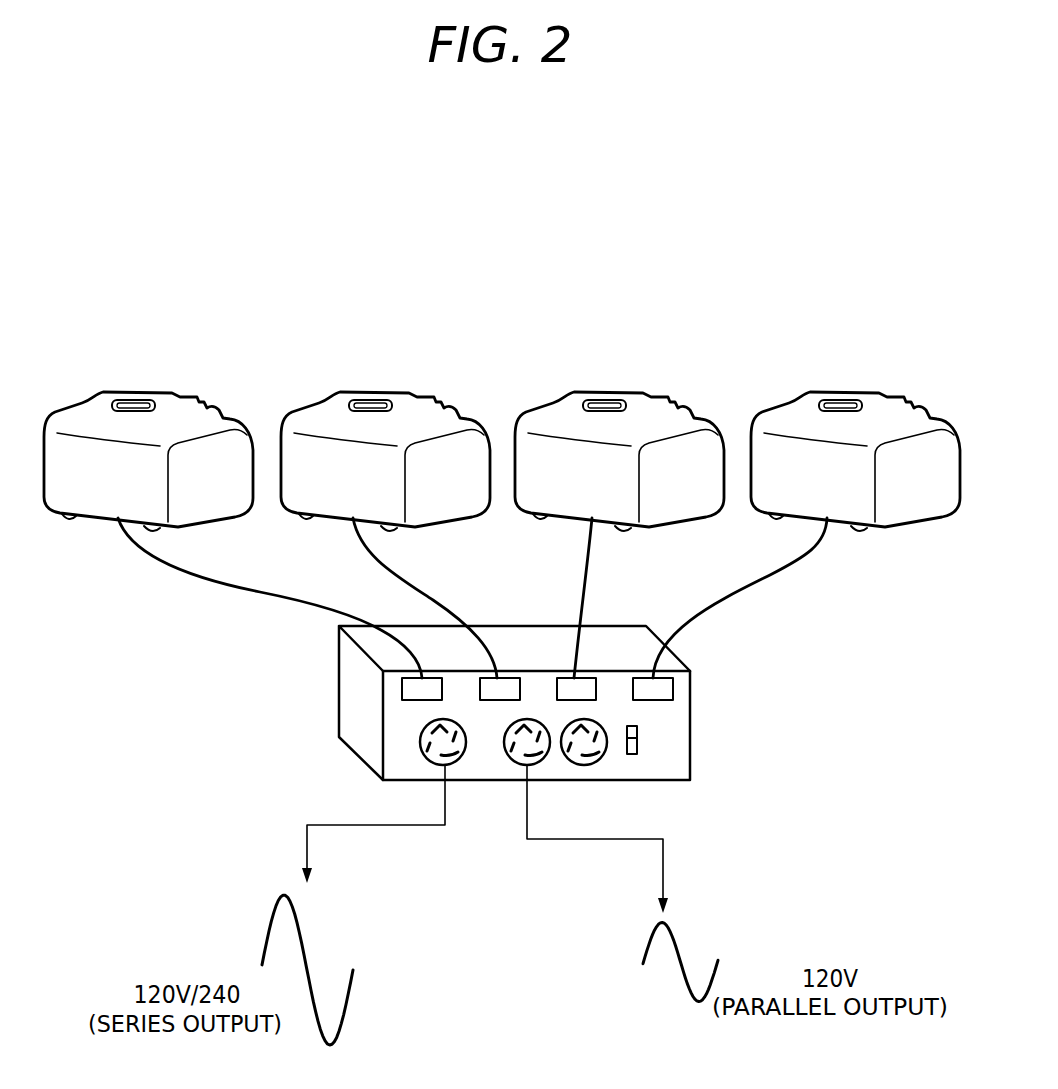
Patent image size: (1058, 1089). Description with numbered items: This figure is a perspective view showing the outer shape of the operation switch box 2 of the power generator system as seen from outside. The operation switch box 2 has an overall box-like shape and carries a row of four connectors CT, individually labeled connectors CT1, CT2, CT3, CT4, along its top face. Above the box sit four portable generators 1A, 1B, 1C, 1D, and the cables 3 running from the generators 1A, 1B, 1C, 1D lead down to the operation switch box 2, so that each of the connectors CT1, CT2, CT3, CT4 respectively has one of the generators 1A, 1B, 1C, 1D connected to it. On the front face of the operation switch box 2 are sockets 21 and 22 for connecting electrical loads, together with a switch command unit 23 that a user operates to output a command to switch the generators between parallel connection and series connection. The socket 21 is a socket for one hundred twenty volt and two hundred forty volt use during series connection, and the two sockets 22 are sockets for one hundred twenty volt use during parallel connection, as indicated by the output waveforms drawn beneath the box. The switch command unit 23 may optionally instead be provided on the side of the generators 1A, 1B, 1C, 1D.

The generator 1A is at (143, 391).
The generator 1B is at (385, 437).
The generator 1C is at (619, 437).
The generator 1D is at (855, 437).
The operation switch box 2 is at (712, 645).
The cables 3 is at (405, 591).
The connectors CT is at (524, 717).
The connector CT1 is at (402, 689).
The connector CT2 is at (480, 697).
The connector CT3 is at (596, 697).
The connector CT4 is at (673, 688).
The socket 21 is at (462, 760).
The sockets 22 is at (540, 762).
The switch command unit 23 is at (637, 743).